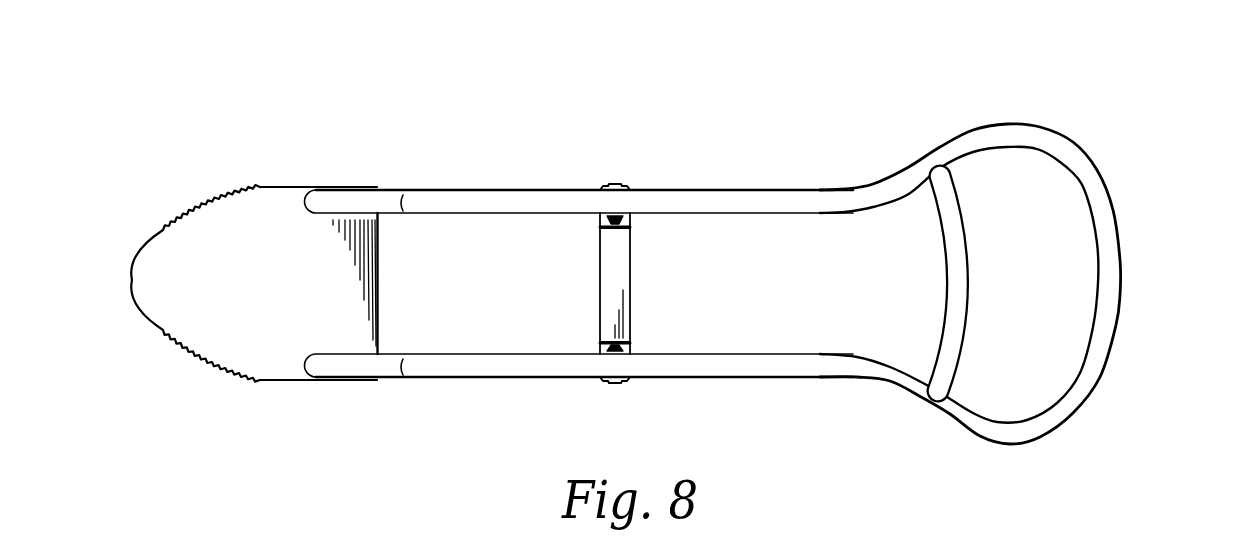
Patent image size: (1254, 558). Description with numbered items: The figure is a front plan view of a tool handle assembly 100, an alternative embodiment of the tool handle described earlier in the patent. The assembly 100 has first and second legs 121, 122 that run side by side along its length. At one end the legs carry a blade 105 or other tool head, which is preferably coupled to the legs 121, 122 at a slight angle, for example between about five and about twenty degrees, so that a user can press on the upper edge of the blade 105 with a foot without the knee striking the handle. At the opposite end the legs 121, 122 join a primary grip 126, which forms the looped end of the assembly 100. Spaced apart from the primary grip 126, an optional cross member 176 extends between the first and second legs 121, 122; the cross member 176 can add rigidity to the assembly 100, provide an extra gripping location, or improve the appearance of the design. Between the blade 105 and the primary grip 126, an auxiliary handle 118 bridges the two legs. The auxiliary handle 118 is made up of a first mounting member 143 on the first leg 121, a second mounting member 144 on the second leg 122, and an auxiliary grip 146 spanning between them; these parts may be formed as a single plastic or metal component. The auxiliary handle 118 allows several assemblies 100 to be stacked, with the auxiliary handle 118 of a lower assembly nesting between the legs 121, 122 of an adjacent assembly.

The tool handle assembly 100 is at (907, 84).
The blade 105 is at (197, 205).
The first leg 121 is at (432, 190).
The second leg 122 is at (437, 378).
The auxiliary handle 118 is at (630, 277).
The first mounting member 143 is at (598, 227).
The second mounting member 144 is at (598, 353).
The auxiliary grip 146 is at (631, 228).
The primary grip 126 is at (1112, 221).
The cross member 176 is at (973, 295).